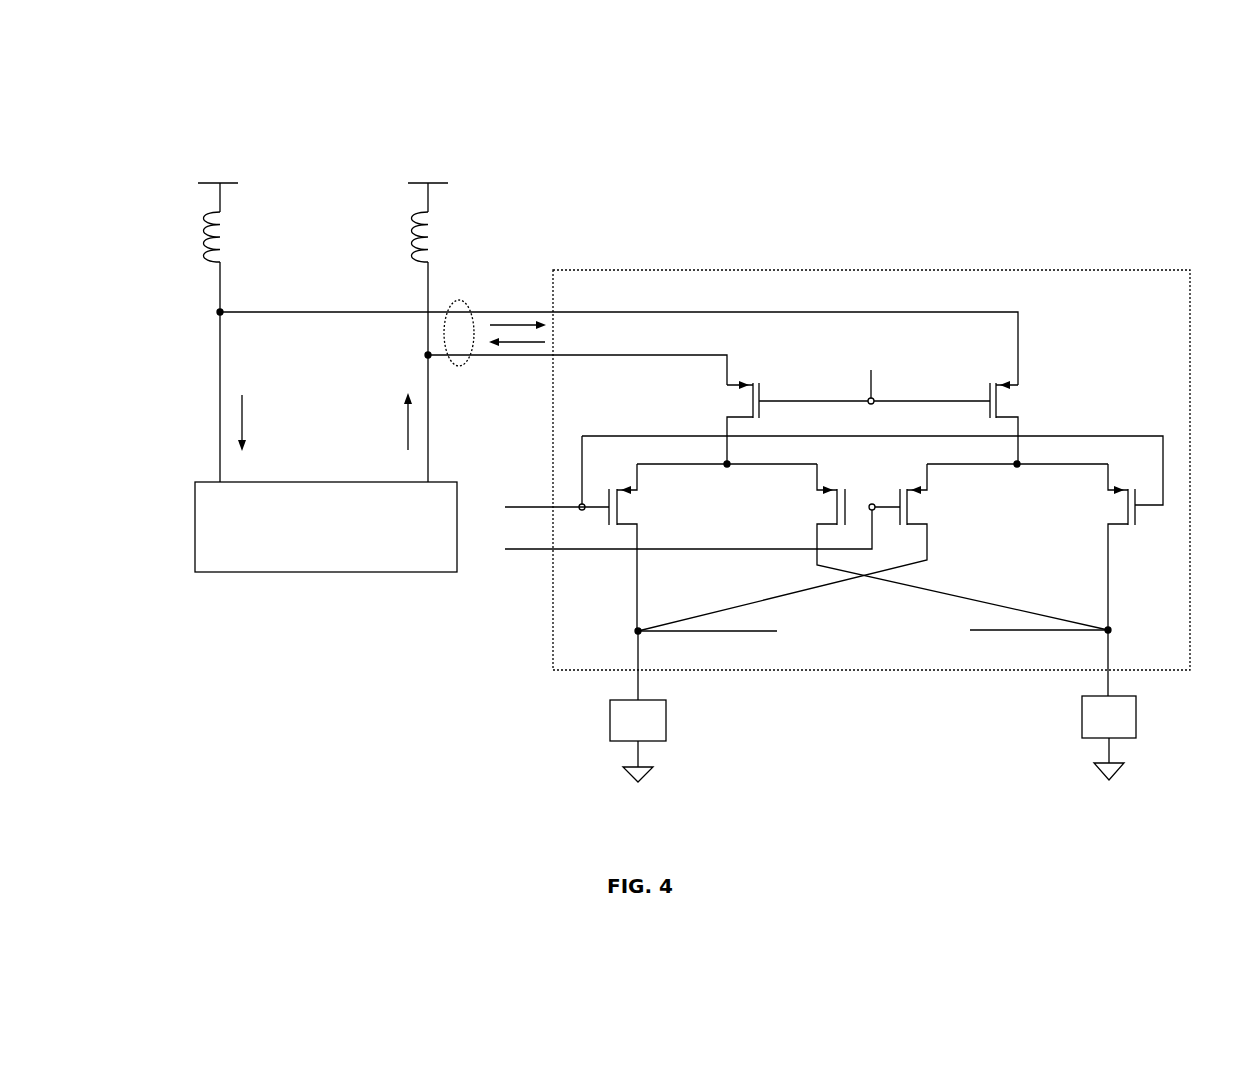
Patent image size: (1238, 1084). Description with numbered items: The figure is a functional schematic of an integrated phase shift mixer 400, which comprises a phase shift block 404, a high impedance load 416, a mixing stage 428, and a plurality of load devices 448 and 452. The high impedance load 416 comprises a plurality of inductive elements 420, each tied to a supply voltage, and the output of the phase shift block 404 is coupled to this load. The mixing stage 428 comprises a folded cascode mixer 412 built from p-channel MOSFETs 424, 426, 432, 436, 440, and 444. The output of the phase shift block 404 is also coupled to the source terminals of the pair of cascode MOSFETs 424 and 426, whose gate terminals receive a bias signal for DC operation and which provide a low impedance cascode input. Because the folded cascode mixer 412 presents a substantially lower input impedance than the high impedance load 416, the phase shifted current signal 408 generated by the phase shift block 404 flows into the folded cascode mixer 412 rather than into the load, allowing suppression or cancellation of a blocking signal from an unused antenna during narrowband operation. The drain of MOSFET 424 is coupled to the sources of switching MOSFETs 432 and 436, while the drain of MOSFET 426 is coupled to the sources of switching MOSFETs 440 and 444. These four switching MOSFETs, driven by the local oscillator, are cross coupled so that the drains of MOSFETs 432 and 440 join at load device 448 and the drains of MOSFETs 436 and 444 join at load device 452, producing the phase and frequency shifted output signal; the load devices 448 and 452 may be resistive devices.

The integrated phase shift mixer 400 is at (312, 710).
The phase shift block 404 is at (291, 573).
The phase shifted current signal 408 is at (459, 300).
The folded cascode mixer 412 is at (979, 269).
The high impedance load 416 is at (494, 196).
The inductive elements 420 is at (207, 259).
The p-channel MOSFET 424 is at (757, 393).
The p-channel MOSFET 426 is at (988, 394).
The mixing stage 428 is at (527, 592).
The p-channel MOSFET 432 is at (643, 534).
The p-channel MOSFET 436 is at (812, 533).
The p-channel MOSFET 440 is at (930, 533).
The p-channel MOSFET 444 is at (1101, 533).
The load device 448 is at (667, 733).
The load device 452 is at (1137, 727).